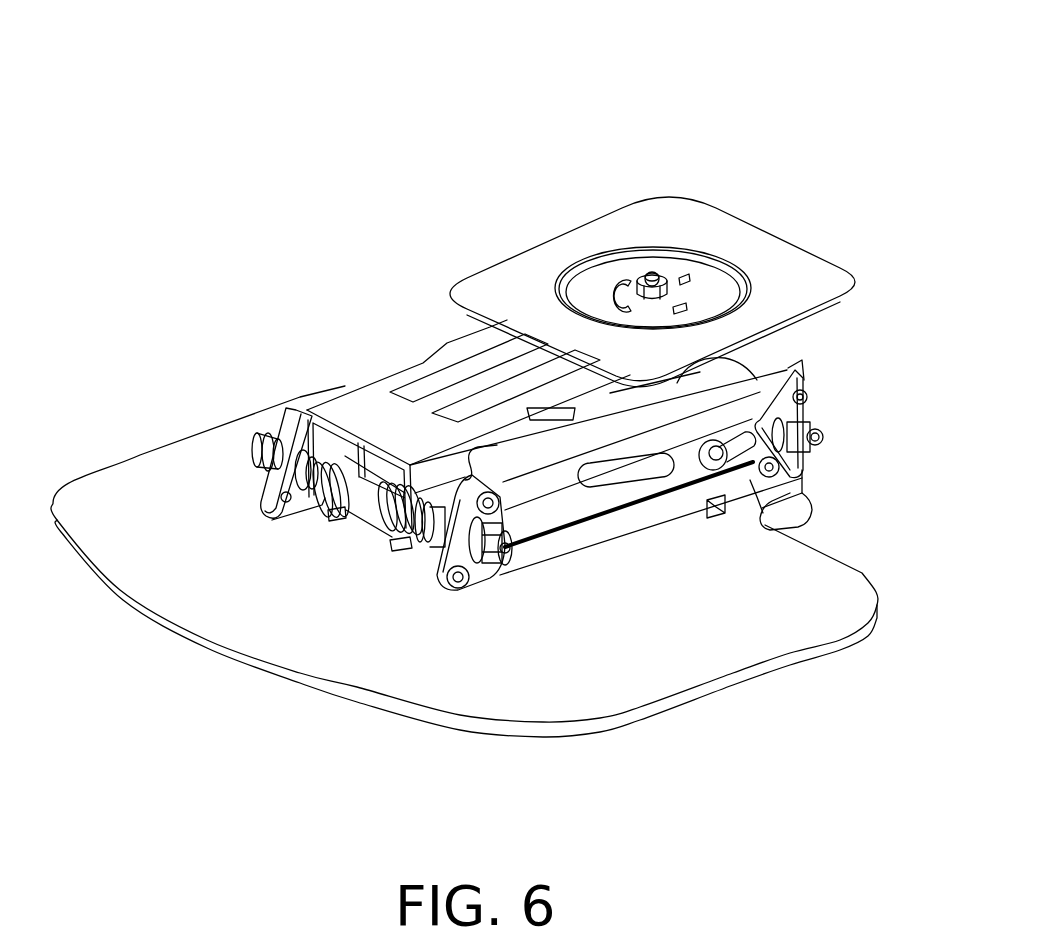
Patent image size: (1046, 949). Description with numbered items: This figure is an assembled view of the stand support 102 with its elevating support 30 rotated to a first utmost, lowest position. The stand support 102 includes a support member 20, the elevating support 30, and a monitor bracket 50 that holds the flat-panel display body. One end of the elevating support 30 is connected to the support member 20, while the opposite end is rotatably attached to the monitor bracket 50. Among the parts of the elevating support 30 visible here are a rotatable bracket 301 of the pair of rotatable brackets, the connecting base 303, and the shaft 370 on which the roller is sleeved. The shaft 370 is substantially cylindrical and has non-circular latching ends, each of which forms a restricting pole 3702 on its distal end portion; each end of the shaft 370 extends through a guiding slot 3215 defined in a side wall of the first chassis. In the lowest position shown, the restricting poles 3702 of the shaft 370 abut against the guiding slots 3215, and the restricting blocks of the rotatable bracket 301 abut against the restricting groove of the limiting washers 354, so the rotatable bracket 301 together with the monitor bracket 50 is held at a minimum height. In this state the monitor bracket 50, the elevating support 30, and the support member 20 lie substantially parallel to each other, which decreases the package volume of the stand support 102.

The stand support 102 is at (506, 61).
The support member 20 is at (170, 480).
The monitor bracket 50 is at (358, 414).
The elevating support 30 is at (606, 556).
The rotatable bracket 301 is at (385, 528).
The limiting washer 354 is at (280, 508).
The shaft 370 is at (722, 468).
The connecting base 303 is at (797, 475).
The guiding slot 3215 is at (790, 517).
The restricting pole 3702 is at (802, 544).